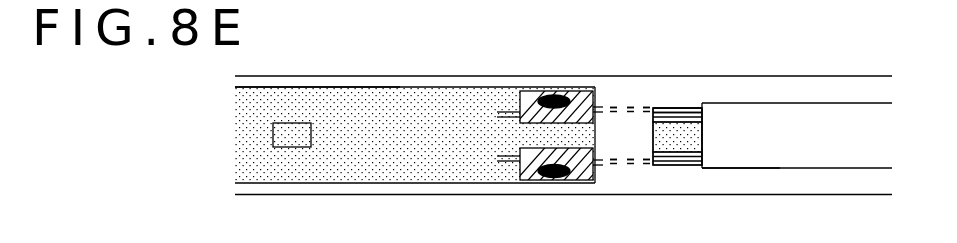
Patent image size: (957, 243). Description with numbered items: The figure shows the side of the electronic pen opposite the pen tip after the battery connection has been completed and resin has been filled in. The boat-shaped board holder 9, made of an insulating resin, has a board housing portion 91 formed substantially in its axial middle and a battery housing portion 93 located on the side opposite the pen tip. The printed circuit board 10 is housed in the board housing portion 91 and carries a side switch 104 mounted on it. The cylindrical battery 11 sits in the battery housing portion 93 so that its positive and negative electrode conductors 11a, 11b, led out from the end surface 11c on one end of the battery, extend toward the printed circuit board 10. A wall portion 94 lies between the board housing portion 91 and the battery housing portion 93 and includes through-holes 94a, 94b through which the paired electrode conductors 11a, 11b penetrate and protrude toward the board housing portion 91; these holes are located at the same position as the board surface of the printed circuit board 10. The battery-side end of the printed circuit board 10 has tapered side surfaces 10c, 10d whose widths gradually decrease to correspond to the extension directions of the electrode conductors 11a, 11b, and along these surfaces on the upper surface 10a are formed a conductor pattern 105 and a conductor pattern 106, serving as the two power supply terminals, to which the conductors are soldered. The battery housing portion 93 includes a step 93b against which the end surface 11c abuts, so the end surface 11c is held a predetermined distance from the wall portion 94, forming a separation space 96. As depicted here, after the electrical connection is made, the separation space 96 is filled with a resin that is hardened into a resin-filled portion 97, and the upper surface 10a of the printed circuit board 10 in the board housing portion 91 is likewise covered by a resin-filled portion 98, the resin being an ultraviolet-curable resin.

The board holder 9 is at (436, 68).
The printed circuit board 10 is at (335, 105).
The upper surface 10a is at (275, 103).
The tapered side surface 10c is at (538, 91).
The tapered side surface 10d is at (538, 181).
The battery 11 is at (837, 120).
The positive electrode conductor 11a is at (672, 124).
The negative electrode conductor 11b is at (693, 125).
The end surface 11c is at (702, 137).
The board housing portion 91 is at (382, 188).
The battery housing portion 93 is at (865, 185).
The step 93b is at (733, 168).
The wall portion 94 is at (620, 96).
The through-hole 94a is at (603, 104).
The through-hole 94b is at (613, 166).
The separation space 96 is at (697, 166).
The resin-filled portion 97 is at (670, 160).
The resin-filled portion 98 is at (392, 105).
The side switch 104 is at (290, 148).
The conductor pattern 105 is at (525, 100).
The conductor pattern 106 is at (527, 172).